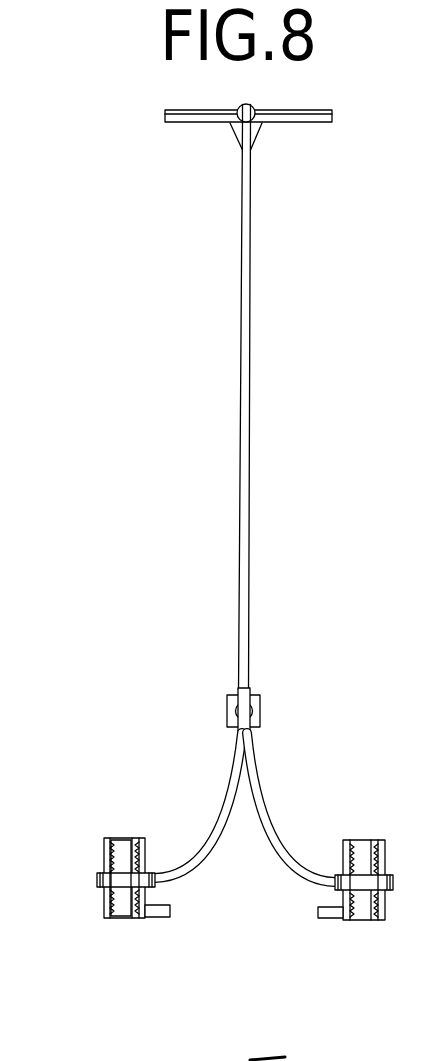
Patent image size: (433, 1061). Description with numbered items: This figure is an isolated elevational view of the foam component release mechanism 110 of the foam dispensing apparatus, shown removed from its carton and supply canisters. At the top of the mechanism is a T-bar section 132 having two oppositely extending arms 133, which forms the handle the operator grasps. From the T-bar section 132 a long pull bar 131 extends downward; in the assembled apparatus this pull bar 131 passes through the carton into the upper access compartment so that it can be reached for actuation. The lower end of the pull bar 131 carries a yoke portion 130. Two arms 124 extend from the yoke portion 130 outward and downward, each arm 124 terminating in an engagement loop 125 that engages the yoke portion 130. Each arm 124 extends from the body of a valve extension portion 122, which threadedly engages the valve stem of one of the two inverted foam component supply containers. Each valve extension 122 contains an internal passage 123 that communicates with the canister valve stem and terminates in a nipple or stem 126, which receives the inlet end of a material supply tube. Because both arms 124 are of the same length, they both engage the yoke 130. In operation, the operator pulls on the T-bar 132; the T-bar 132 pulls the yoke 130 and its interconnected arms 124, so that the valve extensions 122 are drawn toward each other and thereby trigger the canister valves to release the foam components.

The foam component release mechanism 110 is at (230, 203).
The valve extension portion 122 is at (108, 865).
The internal passage 123 is at (128, 850).
The arm 124 is at (204, 850).
The engagement loop 125 is at (261, 706).
The nipple or stem 126 is at (318, 912).
The yoke portion 130 is at (237, 710).
The pull bar 131 is at (243, 296).
The T-bar section 132 is at (303, 124).
The oppositely extending arms 133 is at (197, 116).